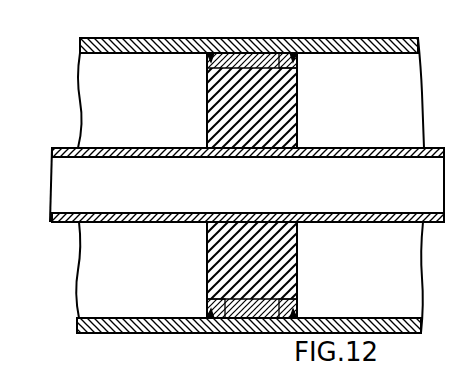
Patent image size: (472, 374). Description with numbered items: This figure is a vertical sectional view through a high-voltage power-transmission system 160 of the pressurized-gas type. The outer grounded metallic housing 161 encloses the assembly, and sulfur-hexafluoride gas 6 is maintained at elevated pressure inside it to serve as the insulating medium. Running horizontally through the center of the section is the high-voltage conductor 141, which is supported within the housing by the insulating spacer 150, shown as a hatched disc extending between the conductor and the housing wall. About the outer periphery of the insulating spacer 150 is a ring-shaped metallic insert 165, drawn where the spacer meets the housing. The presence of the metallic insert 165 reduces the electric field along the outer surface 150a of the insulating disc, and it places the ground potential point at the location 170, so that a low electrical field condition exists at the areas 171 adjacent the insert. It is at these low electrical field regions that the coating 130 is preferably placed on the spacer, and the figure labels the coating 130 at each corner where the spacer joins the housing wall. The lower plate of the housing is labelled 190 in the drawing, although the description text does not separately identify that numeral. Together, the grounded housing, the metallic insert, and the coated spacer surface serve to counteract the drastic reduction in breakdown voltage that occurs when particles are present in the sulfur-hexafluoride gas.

The sulfur-hexafluoride gas 6 is at (120, 63).
The coating 130 is at (204, 56).
The high-voltage conductor 141 is at (329, 137).
The insulating spacer 150 is at (297, 257).
The outer surface of the insulating spacer 150a is at (207, 306).
The high-voltage power-transmission system 160 is at (272, 34).
The outer grounded metallic housing 161 is at (92, 39).
The ring-shaped metallic insert 165 is at (276, 60).
The ground potential point 170 is at (276, 68).
The low electrical field areas 171 is at (299, 57).
The lower plate 190 is at (192, 373).